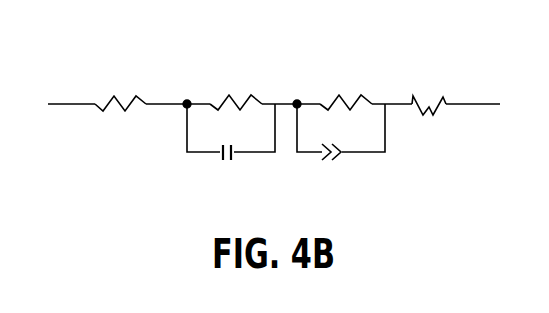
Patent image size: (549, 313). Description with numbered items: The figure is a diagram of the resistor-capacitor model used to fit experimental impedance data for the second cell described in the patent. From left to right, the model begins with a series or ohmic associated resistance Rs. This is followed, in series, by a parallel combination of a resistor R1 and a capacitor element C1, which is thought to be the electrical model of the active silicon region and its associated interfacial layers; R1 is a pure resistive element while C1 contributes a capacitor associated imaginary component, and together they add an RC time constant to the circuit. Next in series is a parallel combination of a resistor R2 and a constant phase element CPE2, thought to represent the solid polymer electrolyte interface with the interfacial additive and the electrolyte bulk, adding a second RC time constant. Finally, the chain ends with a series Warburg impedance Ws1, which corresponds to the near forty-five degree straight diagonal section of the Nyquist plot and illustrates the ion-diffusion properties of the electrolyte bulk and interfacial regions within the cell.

The series resistance Rs is at (120, 83).
The resistor R1 is at (236, 83).
The capacitor element C1 is at (231, 132).
The resistor R2 is at (346, 83).
The constant phase element CPE2 is at (341, 132).
The Warburg impedance Ws1 is at (429, 92).